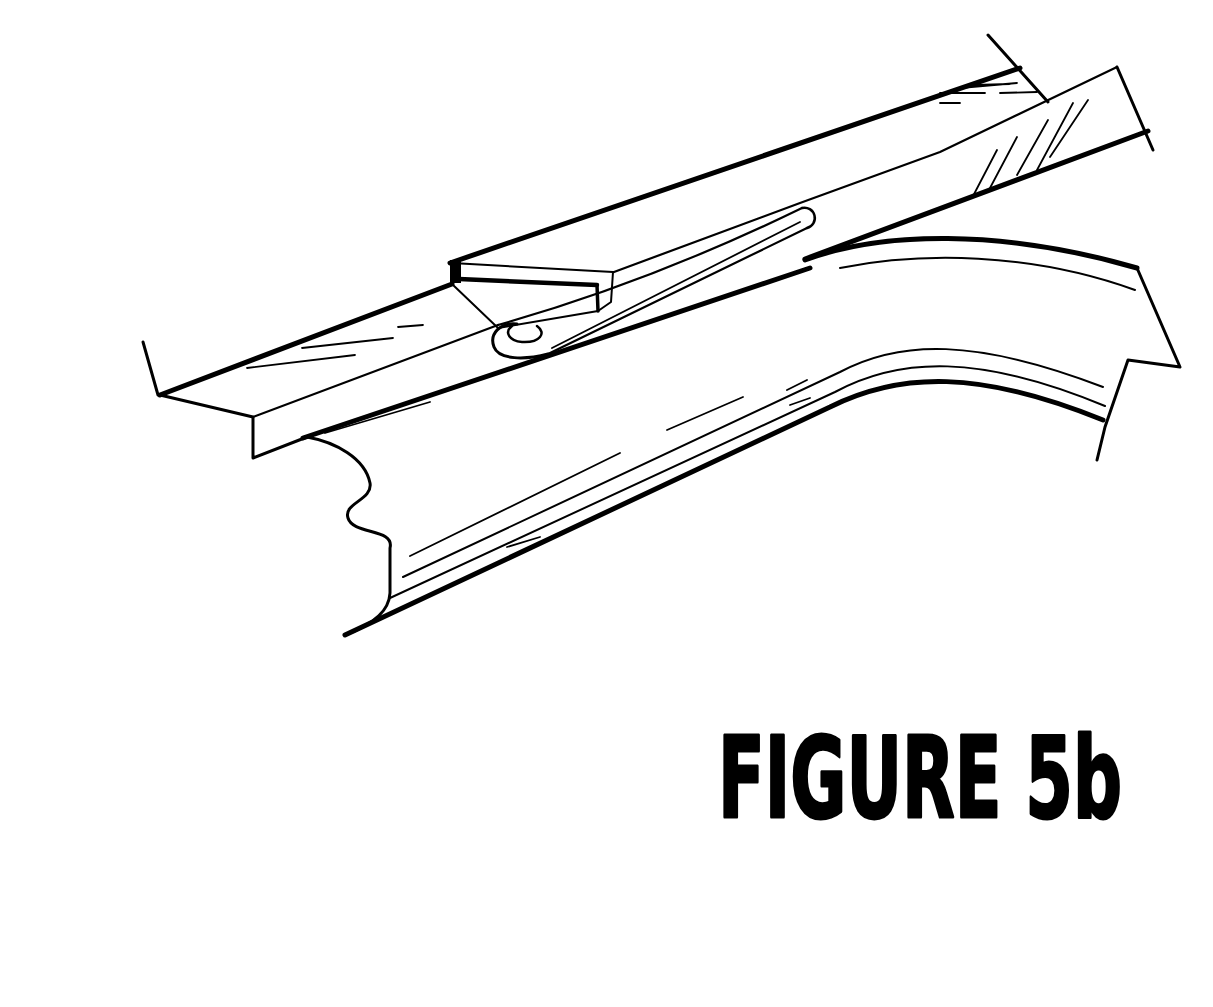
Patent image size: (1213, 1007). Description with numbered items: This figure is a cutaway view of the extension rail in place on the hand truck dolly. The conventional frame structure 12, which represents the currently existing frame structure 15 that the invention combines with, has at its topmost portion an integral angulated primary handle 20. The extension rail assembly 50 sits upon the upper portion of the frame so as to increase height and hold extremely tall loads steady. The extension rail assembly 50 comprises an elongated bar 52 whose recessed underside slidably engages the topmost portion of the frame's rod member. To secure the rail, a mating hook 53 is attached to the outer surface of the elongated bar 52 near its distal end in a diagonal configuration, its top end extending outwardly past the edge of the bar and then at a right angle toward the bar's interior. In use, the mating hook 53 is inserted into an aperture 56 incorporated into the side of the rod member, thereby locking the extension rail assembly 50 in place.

The frame structure 12 is at (476, 363).
The frame structure 15 is at (402, 338).
The primary handle 20 is at (538, 482).
The extension rail assembly 50 is at (830, 175).
The elongated bar 52 is at (1020, 137).
The mating hook 53 is at (641, 300).
The aperture 56 is at (450, 288).